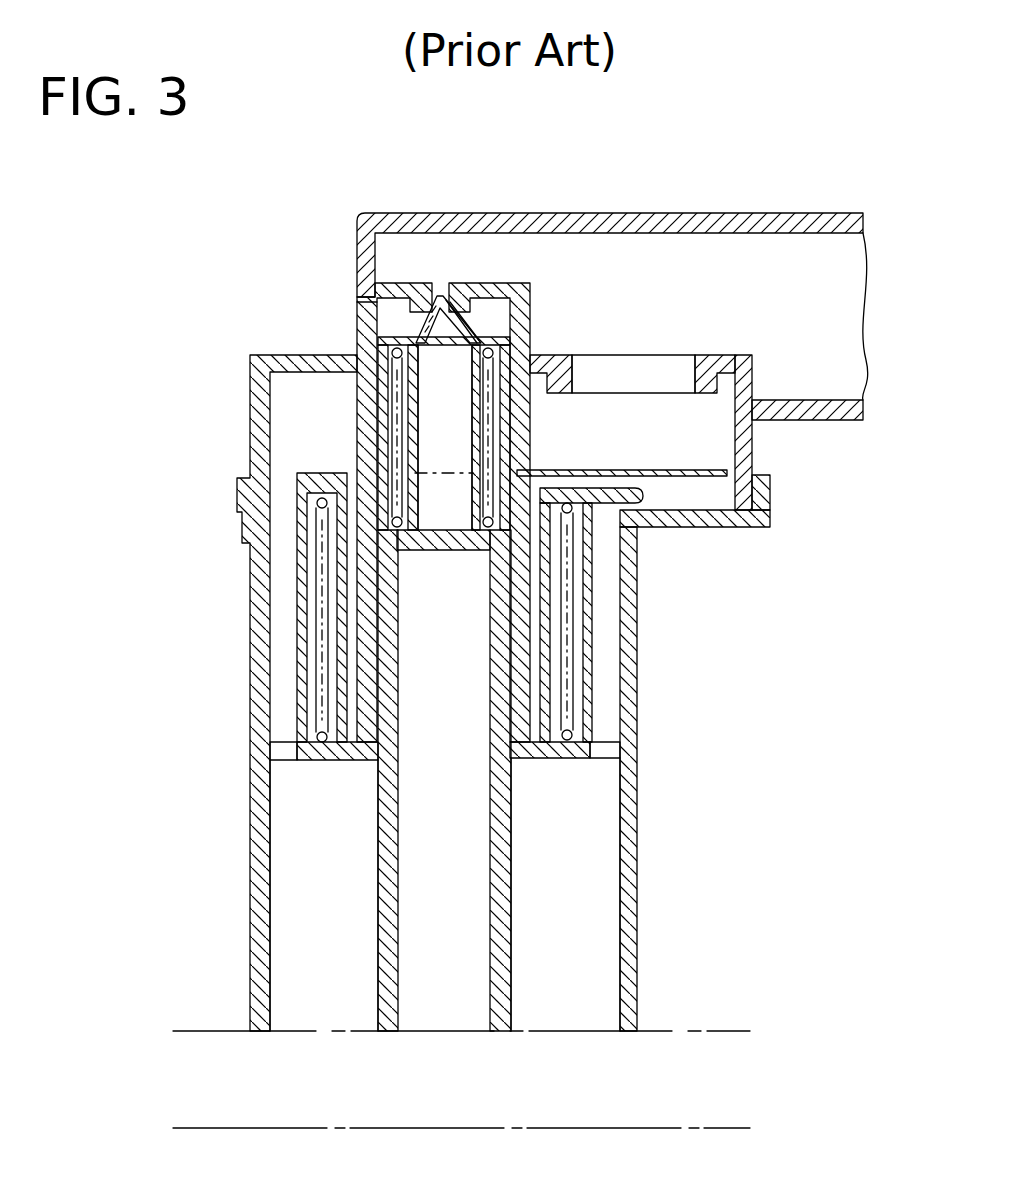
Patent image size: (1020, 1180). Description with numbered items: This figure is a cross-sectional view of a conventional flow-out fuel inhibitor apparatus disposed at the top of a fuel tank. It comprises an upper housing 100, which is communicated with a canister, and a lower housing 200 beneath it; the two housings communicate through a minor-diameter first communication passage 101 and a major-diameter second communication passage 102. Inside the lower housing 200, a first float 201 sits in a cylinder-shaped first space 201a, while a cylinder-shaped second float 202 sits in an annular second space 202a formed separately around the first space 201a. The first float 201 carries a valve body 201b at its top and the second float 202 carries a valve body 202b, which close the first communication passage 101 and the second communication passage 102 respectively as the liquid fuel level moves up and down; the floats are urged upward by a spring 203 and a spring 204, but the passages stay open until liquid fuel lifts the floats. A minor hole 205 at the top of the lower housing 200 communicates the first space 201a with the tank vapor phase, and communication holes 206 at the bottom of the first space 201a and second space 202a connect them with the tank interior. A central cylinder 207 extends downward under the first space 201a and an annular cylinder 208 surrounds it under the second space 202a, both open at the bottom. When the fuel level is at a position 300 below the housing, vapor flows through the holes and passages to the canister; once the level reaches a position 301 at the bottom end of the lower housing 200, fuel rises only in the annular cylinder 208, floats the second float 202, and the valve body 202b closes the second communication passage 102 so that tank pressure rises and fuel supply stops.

The upper housing 100 is at (566, 207).
The first communication passage 101 is at (443, 297).
The second communication passage 102 is at (750, 338).
The lower housing 200 is at (246, 696).
The first float 201 is at (497, 331).
The first space 201a is at (390, 320).
The valve body 201b is at (472, 326).
The second float 202 is at (297, 622).
The second space 202a is at (298, 436).
The valve body 202b is at (690, 470).
The spring 203 is at (397, 396).
The spring 204 is at (575, 651).
The minor hole 205 is at (372, 302).
The communication holes 206 is at (470, 560).
The central cylinder 207 is at (475, 924).
The annular cylinder 208 is at (350, 924).
The position 300 is at (495, 1135).
The position 301 is at (495, 1035).